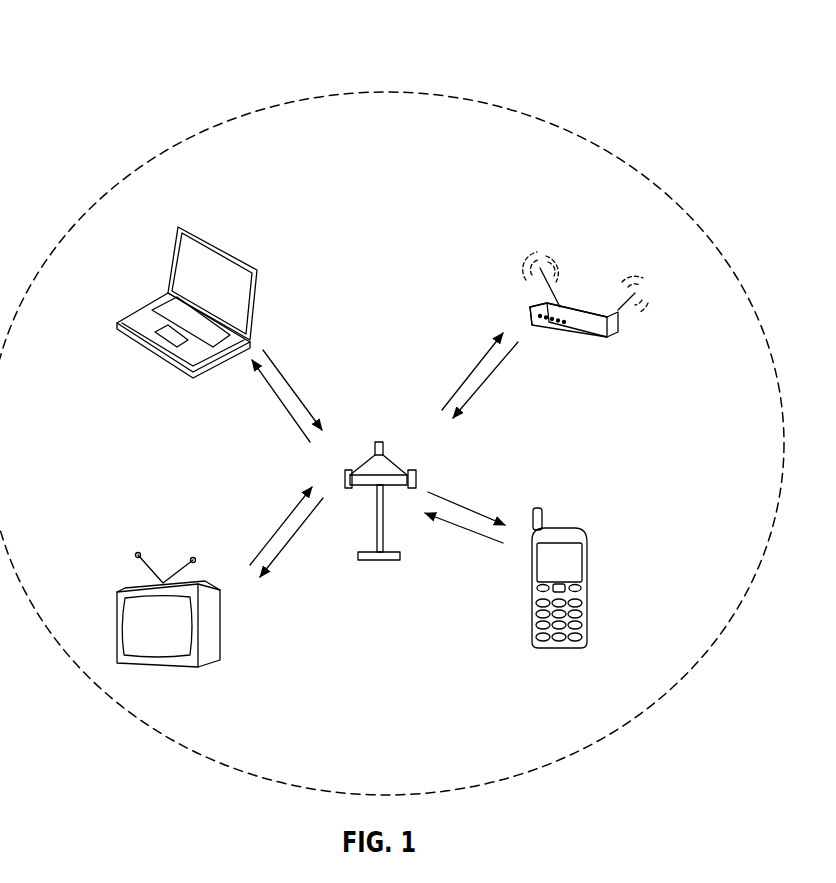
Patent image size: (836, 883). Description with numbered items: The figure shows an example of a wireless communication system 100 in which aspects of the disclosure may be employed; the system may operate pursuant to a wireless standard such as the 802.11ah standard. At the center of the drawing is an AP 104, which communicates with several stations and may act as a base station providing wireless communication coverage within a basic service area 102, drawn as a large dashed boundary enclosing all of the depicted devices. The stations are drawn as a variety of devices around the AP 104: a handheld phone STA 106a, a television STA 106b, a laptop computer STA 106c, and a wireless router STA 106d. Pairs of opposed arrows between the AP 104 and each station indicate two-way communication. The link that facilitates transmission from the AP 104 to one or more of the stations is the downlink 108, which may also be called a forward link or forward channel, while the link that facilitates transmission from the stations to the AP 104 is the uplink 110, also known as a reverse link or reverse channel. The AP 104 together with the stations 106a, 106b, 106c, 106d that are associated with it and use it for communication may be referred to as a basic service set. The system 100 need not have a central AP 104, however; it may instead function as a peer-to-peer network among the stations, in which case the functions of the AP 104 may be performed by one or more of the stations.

The wireless communication system 100 is at (105, 52).
The basic service area 102 is at (383, 92).
The AP 104 is at (380, 441).
The STA 106a is at (553, 525).
The STA 106b is at (143, 590).
The STA 106c is at (160, 293).
The STA 106d is at (567, 302).
The downlink 108 is at (470, 508).
The uplink 110 is at (482, 533).